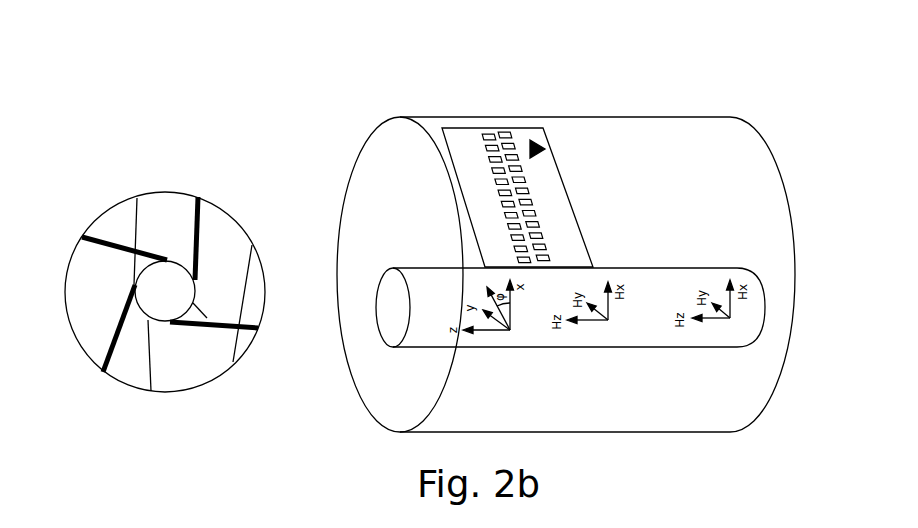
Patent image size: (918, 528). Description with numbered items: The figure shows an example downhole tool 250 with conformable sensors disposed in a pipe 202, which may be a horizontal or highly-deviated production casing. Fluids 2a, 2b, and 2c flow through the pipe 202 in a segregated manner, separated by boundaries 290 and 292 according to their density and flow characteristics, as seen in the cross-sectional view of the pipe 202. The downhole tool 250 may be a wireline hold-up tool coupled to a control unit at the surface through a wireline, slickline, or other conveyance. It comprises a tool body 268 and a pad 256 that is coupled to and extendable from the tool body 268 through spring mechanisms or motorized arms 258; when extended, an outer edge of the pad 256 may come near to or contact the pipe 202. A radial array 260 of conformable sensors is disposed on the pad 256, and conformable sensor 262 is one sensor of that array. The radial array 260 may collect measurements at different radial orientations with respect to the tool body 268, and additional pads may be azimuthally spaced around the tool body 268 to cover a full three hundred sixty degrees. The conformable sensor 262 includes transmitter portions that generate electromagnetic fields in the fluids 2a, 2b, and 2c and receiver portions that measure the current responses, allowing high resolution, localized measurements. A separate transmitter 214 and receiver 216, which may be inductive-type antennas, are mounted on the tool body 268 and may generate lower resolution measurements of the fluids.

The pipe 202 is at (232, 361).
The transmitter 214 is at (594, 275).
The receiver 216 is at (732, 268).
The downhole tool 250 is at (383, 277).
The pad 256 is at (573, 210).
The motorized arms 258 is at (140, 317).
The radial array 260 is at (543, 128).
The conformable sensor 262 is at (492, 143).
The tool body 268 is at (750, 347).
The boundary 290 is at (151, 391).
The boundary 292 is at (243, 307).
The fluid 2a is at (117, 270).
The fluid 2b is at (178, 358).
The fluid 2c is at (253, 288).